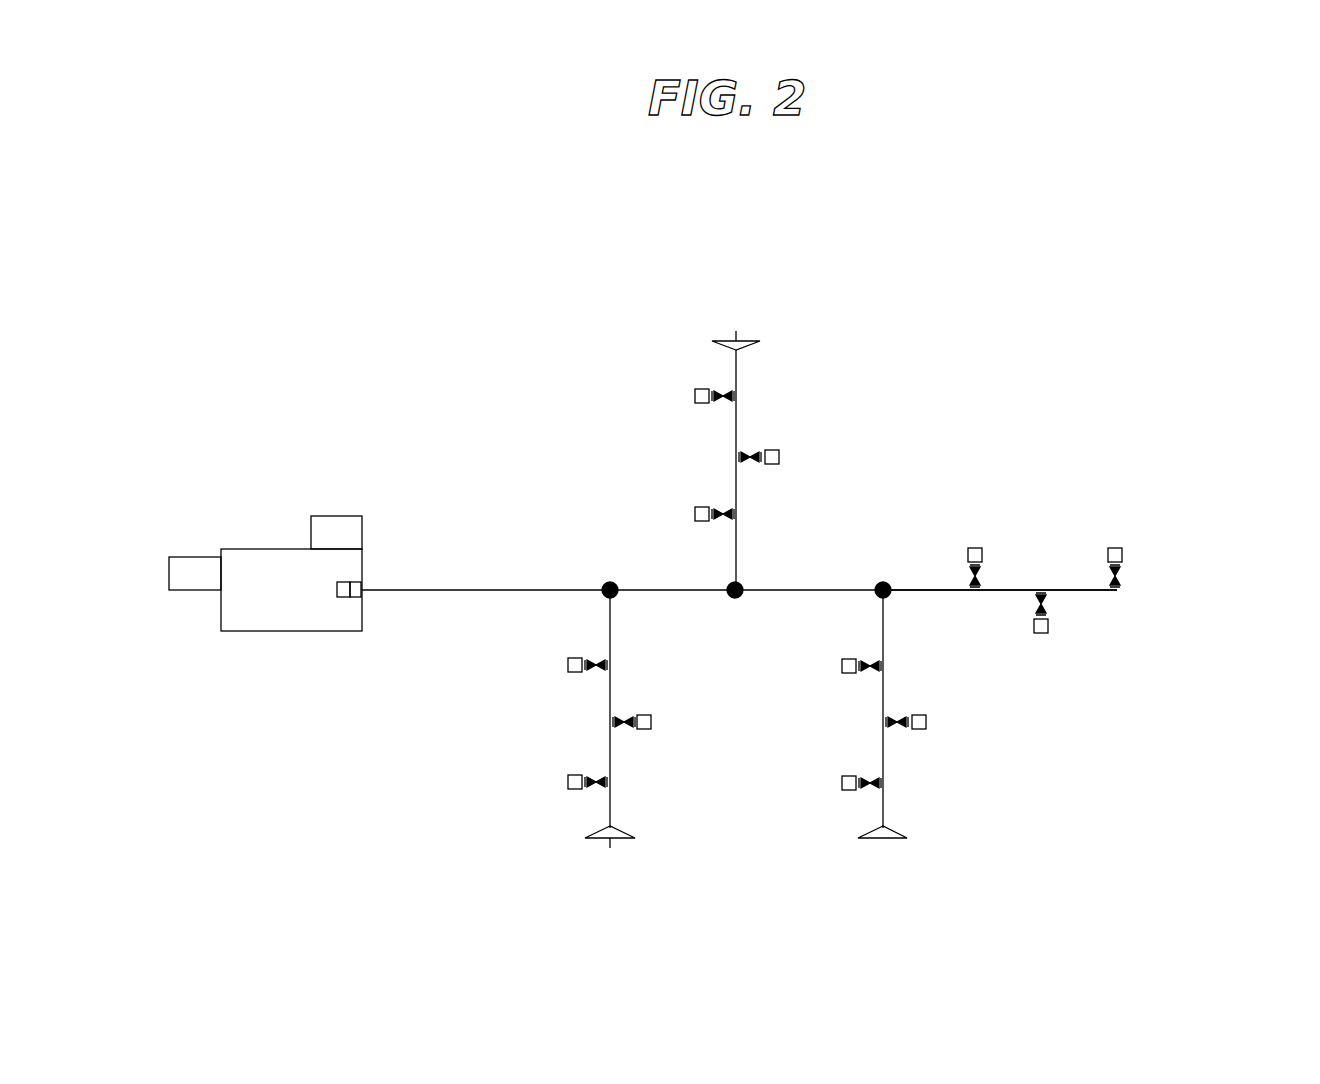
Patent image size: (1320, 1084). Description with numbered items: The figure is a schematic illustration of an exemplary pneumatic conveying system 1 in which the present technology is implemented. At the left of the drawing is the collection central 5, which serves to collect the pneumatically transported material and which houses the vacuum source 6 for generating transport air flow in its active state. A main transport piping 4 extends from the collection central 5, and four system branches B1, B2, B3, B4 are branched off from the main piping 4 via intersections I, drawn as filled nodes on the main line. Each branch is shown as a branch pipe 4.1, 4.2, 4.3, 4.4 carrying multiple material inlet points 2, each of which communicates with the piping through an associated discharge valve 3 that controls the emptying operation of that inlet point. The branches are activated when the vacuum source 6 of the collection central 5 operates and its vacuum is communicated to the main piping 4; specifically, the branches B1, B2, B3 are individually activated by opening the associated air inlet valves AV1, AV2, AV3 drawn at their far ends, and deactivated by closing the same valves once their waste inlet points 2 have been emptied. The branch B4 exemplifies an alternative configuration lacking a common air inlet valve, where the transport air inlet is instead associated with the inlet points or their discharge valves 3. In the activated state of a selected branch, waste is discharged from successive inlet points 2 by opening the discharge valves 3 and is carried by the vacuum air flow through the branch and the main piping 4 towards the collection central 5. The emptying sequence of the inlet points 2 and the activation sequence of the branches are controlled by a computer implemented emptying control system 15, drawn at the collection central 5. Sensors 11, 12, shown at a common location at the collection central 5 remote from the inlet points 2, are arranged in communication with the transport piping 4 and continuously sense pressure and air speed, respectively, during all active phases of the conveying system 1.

The pneumatic conveying system 1 is at (610, 449).
The material inlet point 2 is at (700, 395).
The discharge valve 3 is at (711, 392).
The main transport piping 4 is at (511, 560).
The branch line 4.1 is at (612, 757).
The branch line 4.2 is at (737, 420).
The branch line 4.3 is at (883, 632).
The branch line 4.4 is at (1077, 588).
The collection central 5 is at (233, 540).
The vacuum source 6 is at (336, 516).
The sensor 11 is at (342, 597).
The sensor 12 is at (355, 598).
The emptying control system 15 is at (187, 590).
The intersection I is at (607, 580).
The system branch B1 is at (655, 766).
The system branch B2 is at (836, 415).
The system branch B3 is at (1038, 765).
The system branch B4 is at (1015, 433).
The air inlet valve AV1 is at (609, 848).
The air inlet valve AV2 is at (737, 331).
The air inlet valve AV3 is at (895, 840).